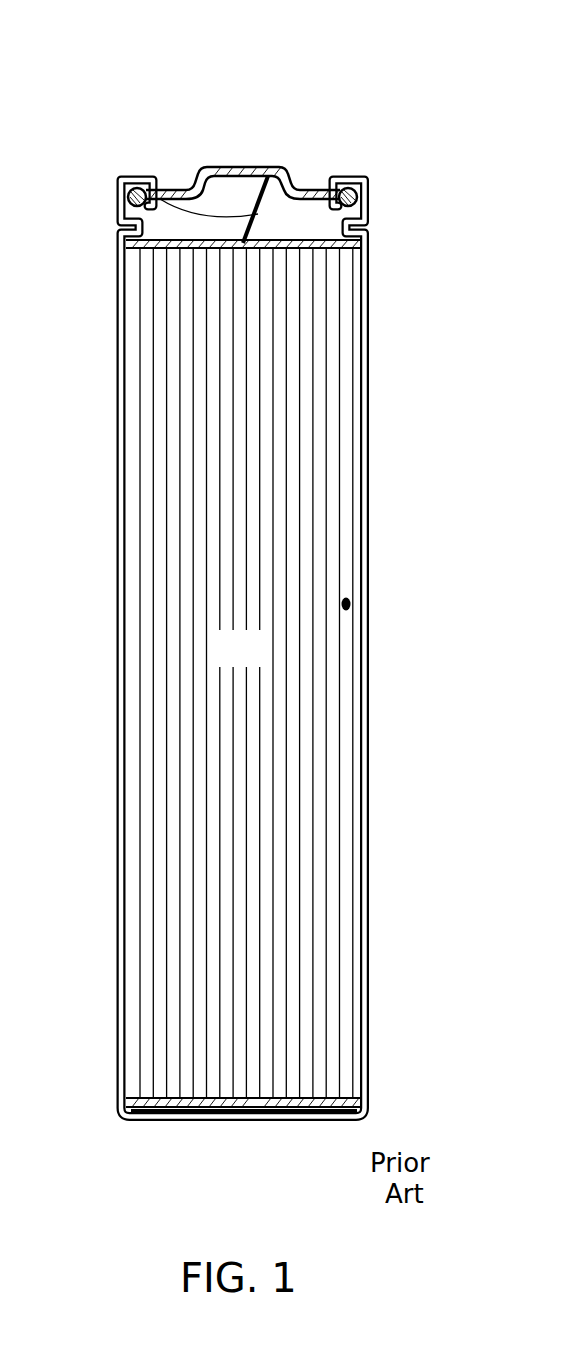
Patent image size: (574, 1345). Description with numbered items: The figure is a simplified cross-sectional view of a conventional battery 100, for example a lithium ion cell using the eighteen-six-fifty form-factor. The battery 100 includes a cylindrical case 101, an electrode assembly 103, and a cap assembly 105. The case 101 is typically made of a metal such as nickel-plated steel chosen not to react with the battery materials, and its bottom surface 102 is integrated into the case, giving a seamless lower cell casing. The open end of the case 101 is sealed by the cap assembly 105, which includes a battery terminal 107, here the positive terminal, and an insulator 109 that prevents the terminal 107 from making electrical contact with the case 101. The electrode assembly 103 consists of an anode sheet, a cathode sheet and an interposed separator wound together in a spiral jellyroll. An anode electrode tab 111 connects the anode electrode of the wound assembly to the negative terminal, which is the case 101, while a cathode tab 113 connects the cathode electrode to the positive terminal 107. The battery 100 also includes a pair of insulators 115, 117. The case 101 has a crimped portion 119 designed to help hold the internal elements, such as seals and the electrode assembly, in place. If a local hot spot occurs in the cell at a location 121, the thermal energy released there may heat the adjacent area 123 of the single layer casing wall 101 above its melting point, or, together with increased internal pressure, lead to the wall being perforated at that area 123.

The battery 100 is at (398, 333).
The cylindrical case 101 is at (118, 628).
The bottom surface 102 is at (202, 1128).
The electrode assembly 103 is at (262, 659).
The cap assembly 105 is at (292, 94).
The battery terminal 107 is at (229, 166).
The insulator 109 is at (351, 188).
The anode electrode tab 111 is at (256, 1108).
The cathode tab 113 is at (124, 178).
The insulator 115 is at (324, 1096).
The insulator 117 is at (176, 249).
The crimped portion 119 is at (382, 224).
The location 121 is at (348, 598).
The adjacent area 123 is at (388, 604).